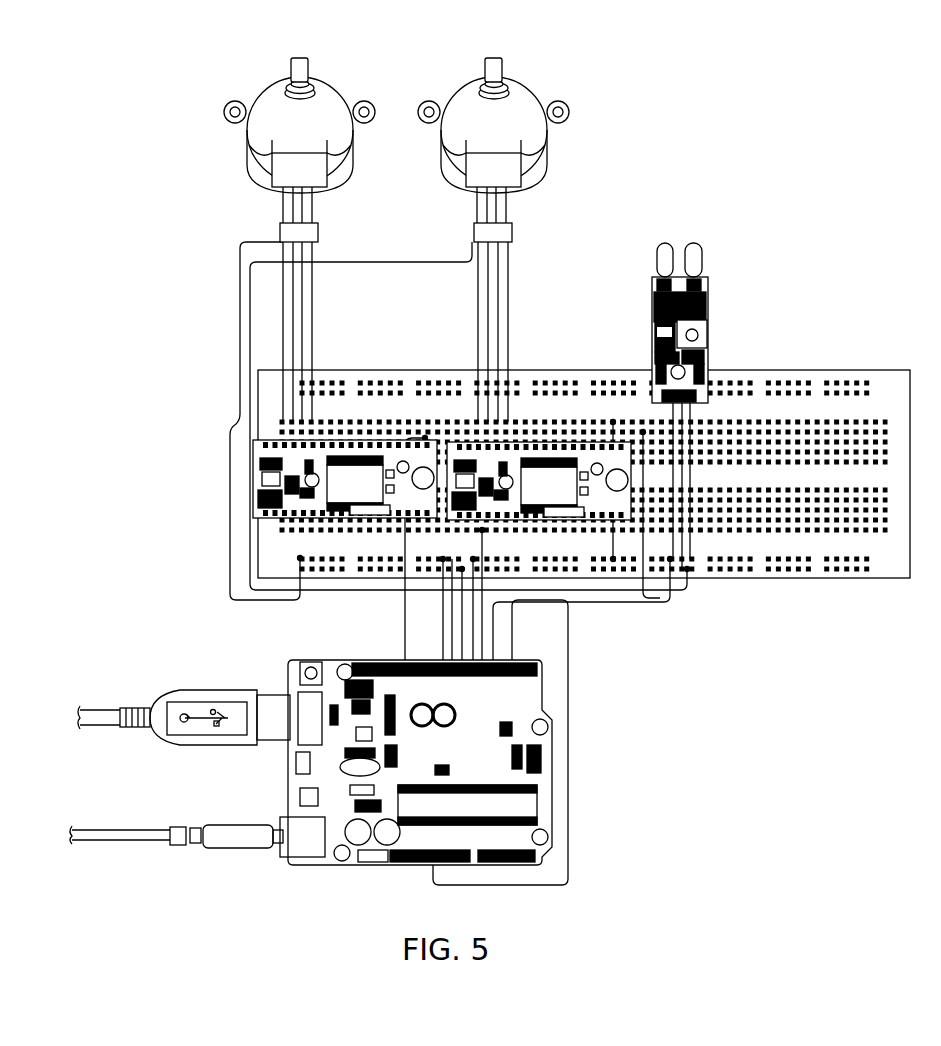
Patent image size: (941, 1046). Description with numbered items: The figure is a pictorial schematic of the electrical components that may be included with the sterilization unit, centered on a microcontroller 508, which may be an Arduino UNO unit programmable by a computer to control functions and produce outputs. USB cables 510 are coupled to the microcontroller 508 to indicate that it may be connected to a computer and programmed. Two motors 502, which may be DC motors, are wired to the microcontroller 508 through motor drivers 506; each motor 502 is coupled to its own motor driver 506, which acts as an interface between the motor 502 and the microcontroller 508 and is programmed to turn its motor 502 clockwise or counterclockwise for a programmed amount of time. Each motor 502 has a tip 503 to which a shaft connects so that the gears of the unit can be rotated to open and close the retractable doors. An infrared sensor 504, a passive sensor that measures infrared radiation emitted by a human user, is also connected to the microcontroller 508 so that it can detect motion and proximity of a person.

The motor 502 is at (258, 148).
The tip of the motor 503 is at (297, 55).
The infrared sensor 504 is at (712, 330).
The motor driver 506 is at (257, 492).
The microcontroller 508 is at (420, 836).
The USB cables 510 is at (150, 700).